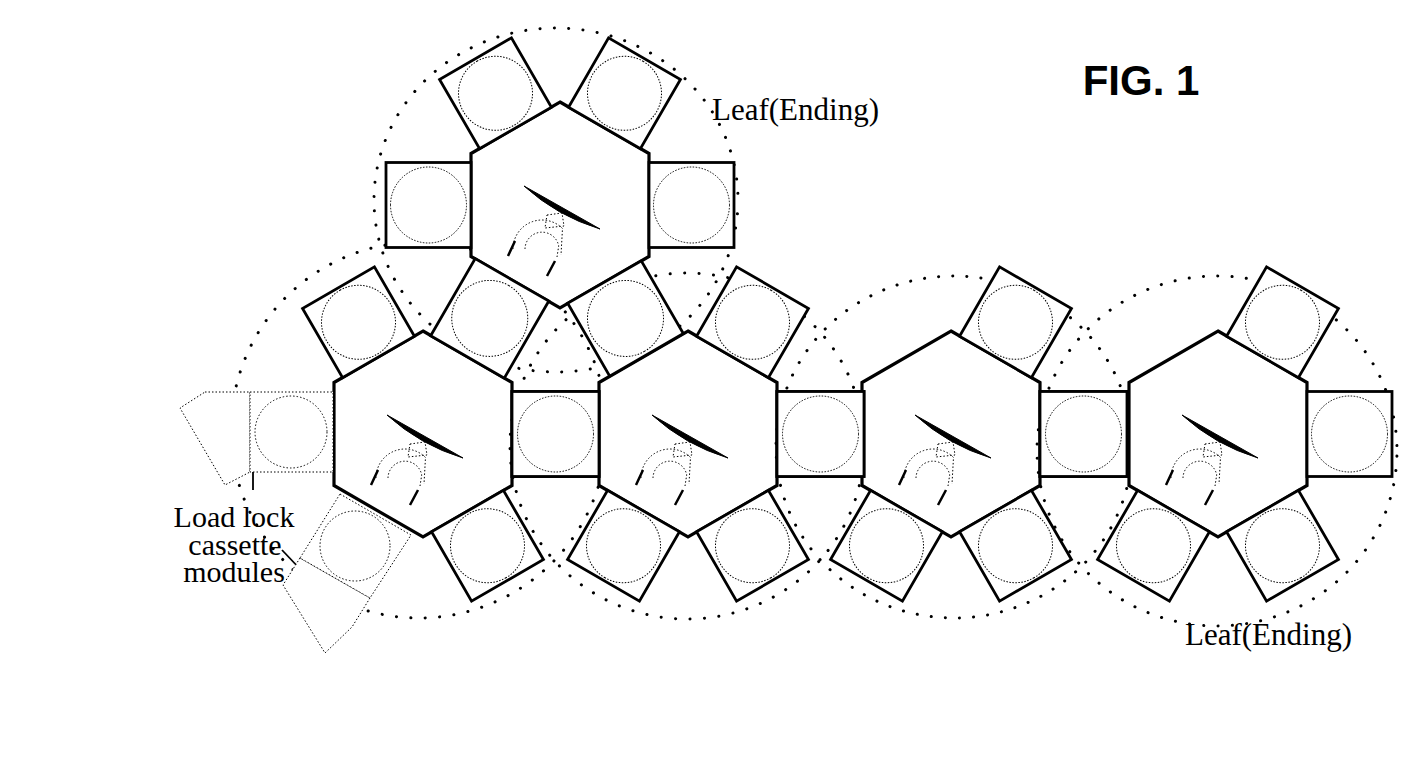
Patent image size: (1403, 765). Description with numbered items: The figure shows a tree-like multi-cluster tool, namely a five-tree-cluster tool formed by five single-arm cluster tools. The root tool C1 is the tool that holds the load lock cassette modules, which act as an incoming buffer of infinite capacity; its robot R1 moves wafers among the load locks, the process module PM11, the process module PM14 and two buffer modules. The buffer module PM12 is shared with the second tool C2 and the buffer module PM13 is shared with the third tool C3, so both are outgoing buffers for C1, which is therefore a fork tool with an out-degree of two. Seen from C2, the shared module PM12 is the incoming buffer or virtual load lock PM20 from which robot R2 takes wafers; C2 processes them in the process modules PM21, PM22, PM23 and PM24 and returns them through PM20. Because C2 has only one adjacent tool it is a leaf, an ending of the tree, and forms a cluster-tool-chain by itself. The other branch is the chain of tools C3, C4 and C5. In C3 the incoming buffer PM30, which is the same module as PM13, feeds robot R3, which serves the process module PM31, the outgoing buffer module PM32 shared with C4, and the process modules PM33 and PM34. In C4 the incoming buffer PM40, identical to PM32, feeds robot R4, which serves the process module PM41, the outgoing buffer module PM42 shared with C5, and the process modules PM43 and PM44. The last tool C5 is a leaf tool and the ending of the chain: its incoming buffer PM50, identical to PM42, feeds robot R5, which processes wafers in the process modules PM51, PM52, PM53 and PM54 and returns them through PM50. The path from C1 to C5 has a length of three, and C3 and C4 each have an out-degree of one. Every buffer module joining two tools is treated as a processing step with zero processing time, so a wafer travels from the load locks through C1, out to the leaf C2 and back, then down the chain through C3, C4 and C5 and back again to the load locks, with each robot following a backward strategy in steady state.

The root cluster tool C1 is at (414, 430).
The leaf cluster tool C2 is at (556, 200).
The cluster tool C3 is at (687, 463).
The cluster tool C4 is at (954, 434).
The leaf cluster tool C5 is at (1217, 441).
The robot R1 is at (417, 455).
The robot R2 is at (554, 226).
The robot R3 is at (682, 455).
The robot R4 is at (945, 455).
The robot R5 is at (1212, 455).
The process module PM11 is at (359, 322).
The buffer module PM12 is at (490, 322).
The buffer module PM13 is at (530, 434).
The process module PM14 is at (488, 545).
The incoming buffer module PM20 is at (609, 318).
The process module PM21 is at (428, 205).
The process module PM22 is at (496, 93).
The process module PM23 is at (625, 93).
The process module PM24 is at (691, 205).
The incoming buffer module PM30 is at (583, 434).
The process module PM31 is at (753, 322).
The buffer module PM32 is at (794, 434).
The process module PM33 is at (753, 545).
The process module PM34 is at (624, 545).
The incoming buffer module PM40 is at (845, 434).
The process module PM41 is at (1016, 322).
The buffer module PM42 is at (1057, 434).
The process module PM43 is at (1016, 545).
The process module PM44 is at (887, 545).
The incoming buffer module PM50 is at (1110, 434).
The process module PM51 is at (1283, 322).
The process module PM52 is at (1349, 434).
The process module PM53 is at (1283, 545).
The process module PM54 is at (1154, 545).